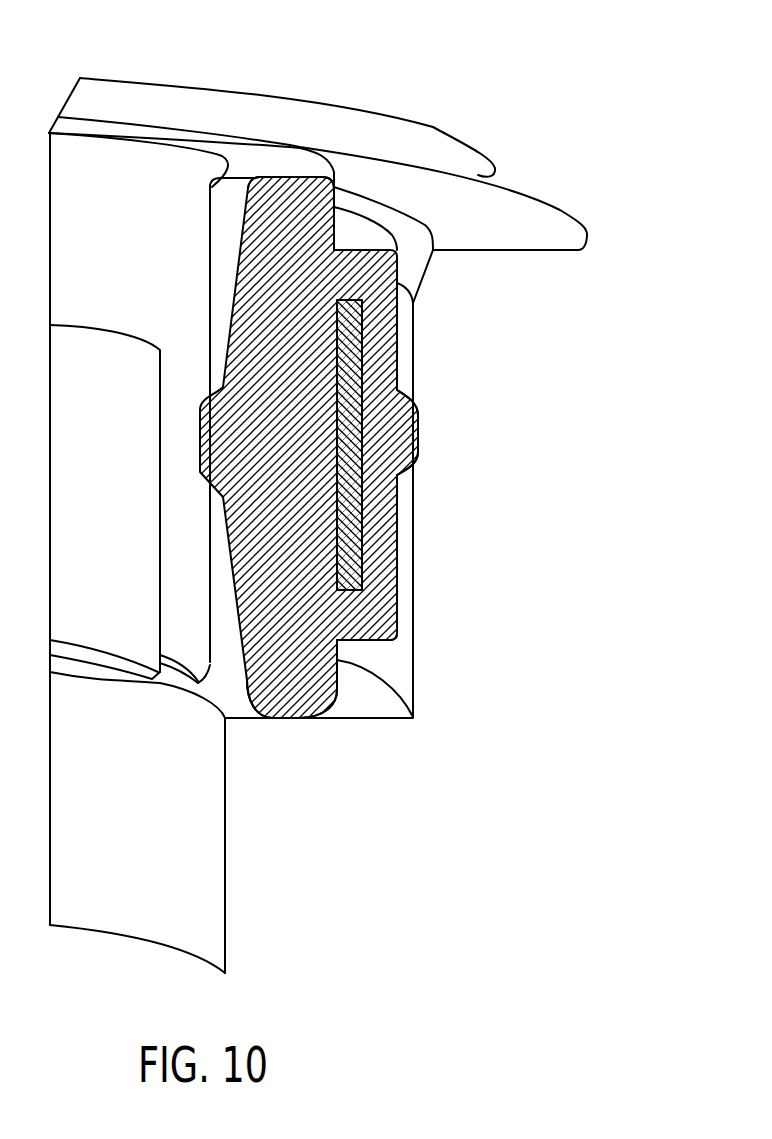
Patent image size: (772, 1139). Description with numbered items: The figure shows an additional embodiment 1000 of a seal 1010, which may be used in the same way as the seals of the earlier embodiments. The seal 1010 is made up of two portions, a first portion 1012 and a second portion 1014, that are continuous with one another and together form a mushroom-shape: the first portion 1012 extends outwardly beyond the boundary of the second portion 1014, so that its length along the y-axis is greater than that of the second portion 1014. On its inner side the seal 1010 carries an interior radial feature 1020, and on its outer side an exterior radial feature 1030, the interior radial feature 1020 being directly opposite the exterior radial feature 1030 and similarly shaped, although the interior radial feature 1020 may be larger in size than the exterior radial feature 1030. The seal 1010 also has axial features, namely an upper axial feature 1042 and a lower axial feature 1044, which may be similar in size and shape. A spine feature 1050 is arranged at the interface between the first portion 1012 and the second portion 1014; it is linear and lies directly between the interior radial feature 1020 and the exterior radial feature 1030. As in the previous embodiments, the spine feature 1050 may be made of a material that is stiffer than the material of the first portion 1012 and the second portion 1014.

The additional embodiment 1000 is at (634, 42).
The seal 1010 is at (397, 283).
The first portion 1012 is at (242, 294).
The second portion 1014 is at (367, 630).
The interior radial feature 1020 is at (198, 452).
The exterior radial feature 1030 is at (420, 441).
The upper axial feature 1042 is at (272, 177).
The lower axial feature 1044 is at (288, 718).
The spine feature 1050 is at (365, 550).